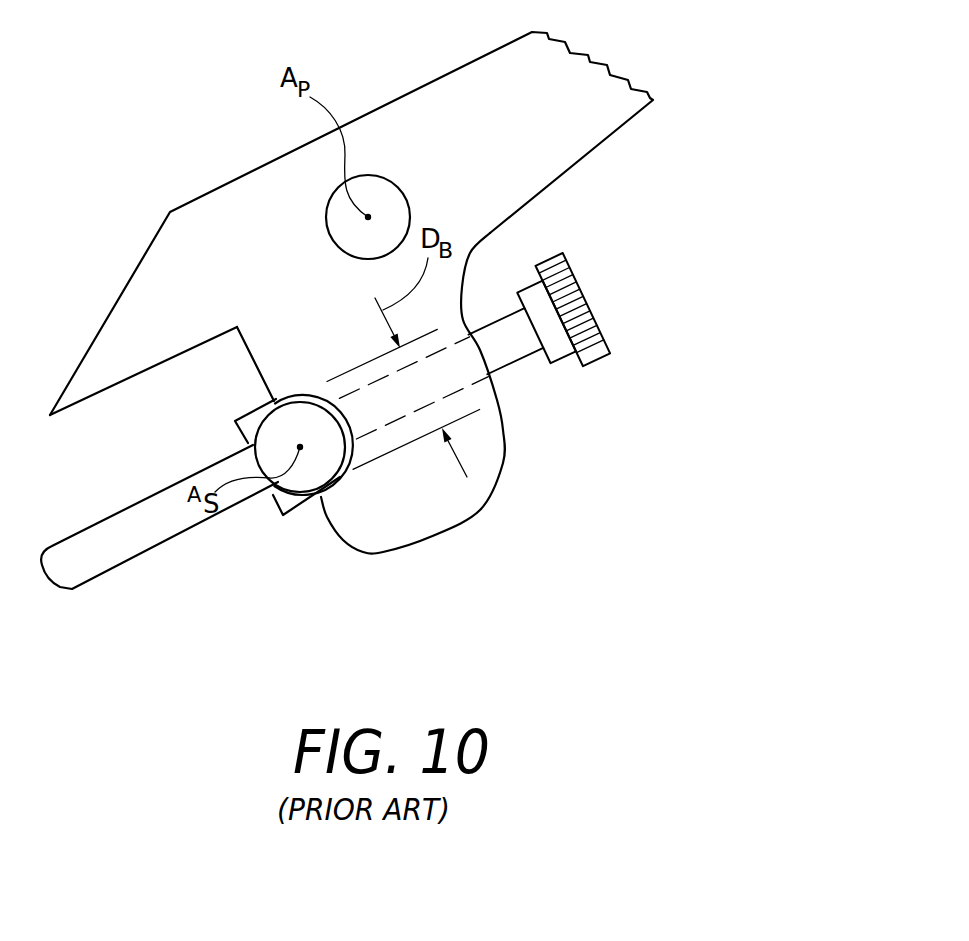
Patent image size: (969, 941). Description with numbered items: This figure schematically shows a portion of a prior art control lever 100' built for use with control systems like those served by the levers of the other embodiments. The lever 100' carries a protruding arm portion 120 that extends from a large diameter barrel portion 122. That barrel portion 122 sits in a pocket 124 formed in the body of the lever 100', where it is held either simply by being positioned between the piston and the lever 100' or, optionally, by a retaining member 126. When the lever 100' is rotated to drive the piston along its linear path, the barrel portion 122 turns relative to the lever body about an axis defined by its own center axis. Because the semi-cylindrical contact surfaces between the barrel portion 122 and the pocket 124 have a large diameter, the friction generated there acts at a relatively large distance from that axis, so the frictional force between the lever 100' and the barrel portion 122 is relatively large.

The lever 100' is at (425, 293).
The protruding arm portion 120 is at (133, 562).
The barrel portion 122 is at (283, 515).
The pocket 124 is at (322, 397).
The retaining member 126 is at (241, 419).